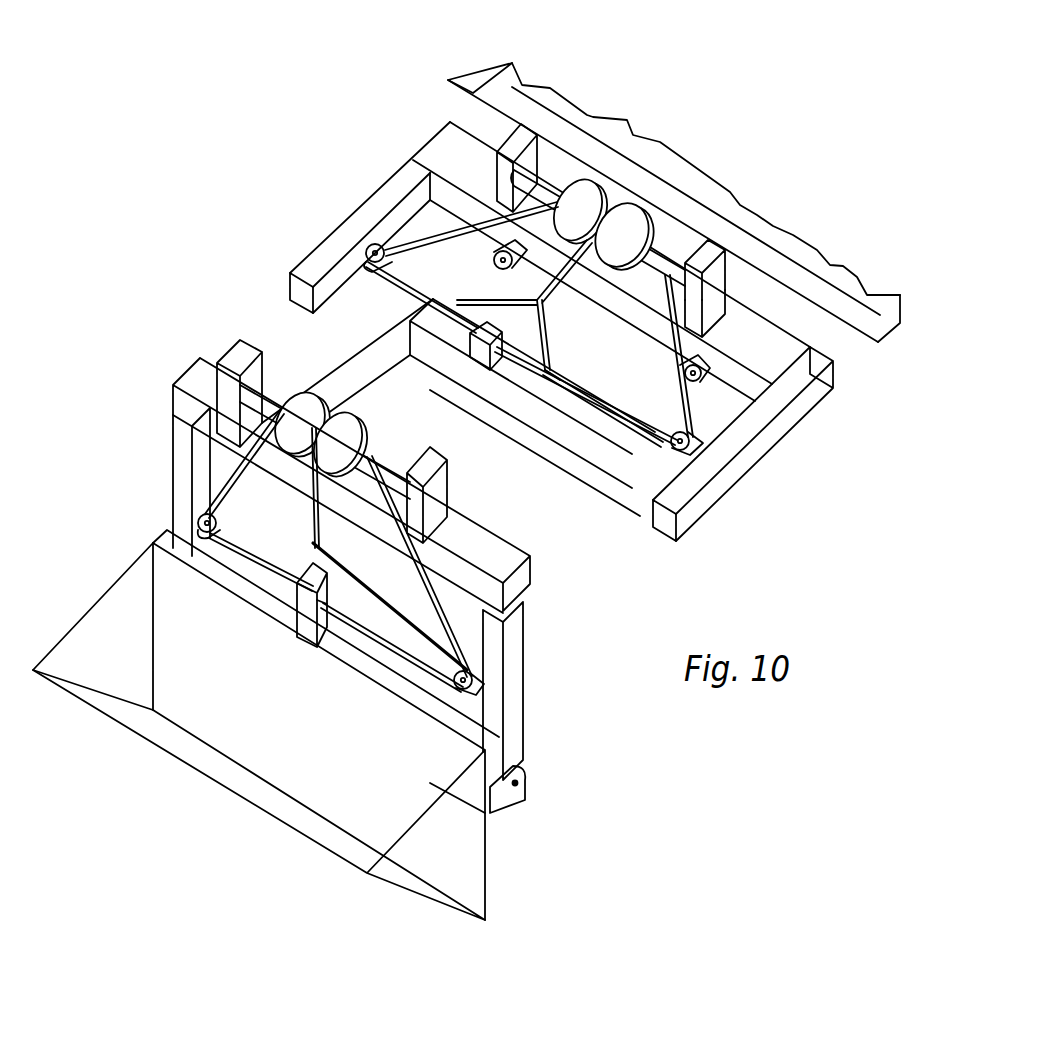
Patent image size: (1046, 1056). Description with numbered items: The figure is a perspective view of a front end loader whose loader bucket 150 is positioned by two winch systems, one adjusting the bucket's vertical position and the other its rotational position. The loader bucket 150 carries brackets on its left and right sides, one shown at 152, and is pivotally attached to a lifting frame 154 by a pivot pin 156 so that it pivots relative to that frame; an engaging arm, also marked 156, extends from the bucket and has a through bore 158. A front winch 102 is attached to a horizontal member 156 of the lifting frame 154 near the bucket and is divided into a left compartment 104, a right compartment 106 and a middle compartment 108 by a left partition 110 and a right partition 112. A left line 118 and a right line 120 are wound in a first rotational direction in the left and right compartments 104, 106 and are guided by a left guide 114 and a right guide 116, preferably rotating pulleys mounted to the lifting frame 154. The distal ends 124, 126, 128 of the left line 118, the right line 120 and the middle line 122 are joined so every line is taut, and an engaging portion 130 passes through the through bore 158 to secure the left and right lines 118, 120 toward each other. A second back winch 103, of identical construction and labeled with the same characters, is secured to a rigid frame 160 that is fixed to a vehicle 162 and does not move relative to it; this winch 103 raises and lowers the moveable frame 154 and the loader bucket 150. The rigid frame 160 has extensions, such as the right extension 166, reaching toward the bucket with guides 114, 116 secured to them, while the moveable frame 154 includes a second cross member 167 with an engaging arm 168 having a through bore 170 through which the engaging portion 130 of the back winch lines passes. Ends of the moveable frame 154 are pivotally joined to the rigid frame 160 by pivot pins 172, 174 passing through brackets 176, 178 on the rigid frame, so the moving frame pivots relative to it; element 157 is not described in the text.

The front winch 102 is at (540, 96).
The second back winch 103 is at (793, 242).
The left compartment 104 is at (538, 134).
The right compartment 106 is at (686, 180).
The middle compartment 108 is at (600, 195).
The left partition 110 is at (632, 172).
The right partition 112 is at (650, 215).
The left guide 114 is at (372, 244).
The right guide 116 is at (690, 458).
The left line 118 is at (448, 124).
The right line 120 is at (716, 293).
The middle line 122 is at (540, 303).
The distal end of left line 124 is at (452, 275).
The distal end of right line 126 is at (558, 368).
The distal end of middle line 128 is at (548, 318).
The engaging portion 130 is at (420, 317).
The loader bucket 150 is at (233, 777).
The bracket 152 is at (500, 797).
The lifting frame 154 is at (536, 530).
The pivot pin 156 is at (300, 620).
The bearing block 157 is at (213, 378).
The through bore 158 is at (323, 610).
The rigid frame 160 is at (822, 388).
The vehicle 162 is at (466, 72).
The right extension 166 is at (303, 278).
The second cross member 167 is at (585, 422).
The engaging arm 168 is at (541, 447).
The through bore 170 is at (490, 372).
The pivot pin 172 is at (516, 272).
The pivot pin 174 is at (722, 447).
The bracket 176 is at (410, 290).
The bracket 178 is at (705, 378).